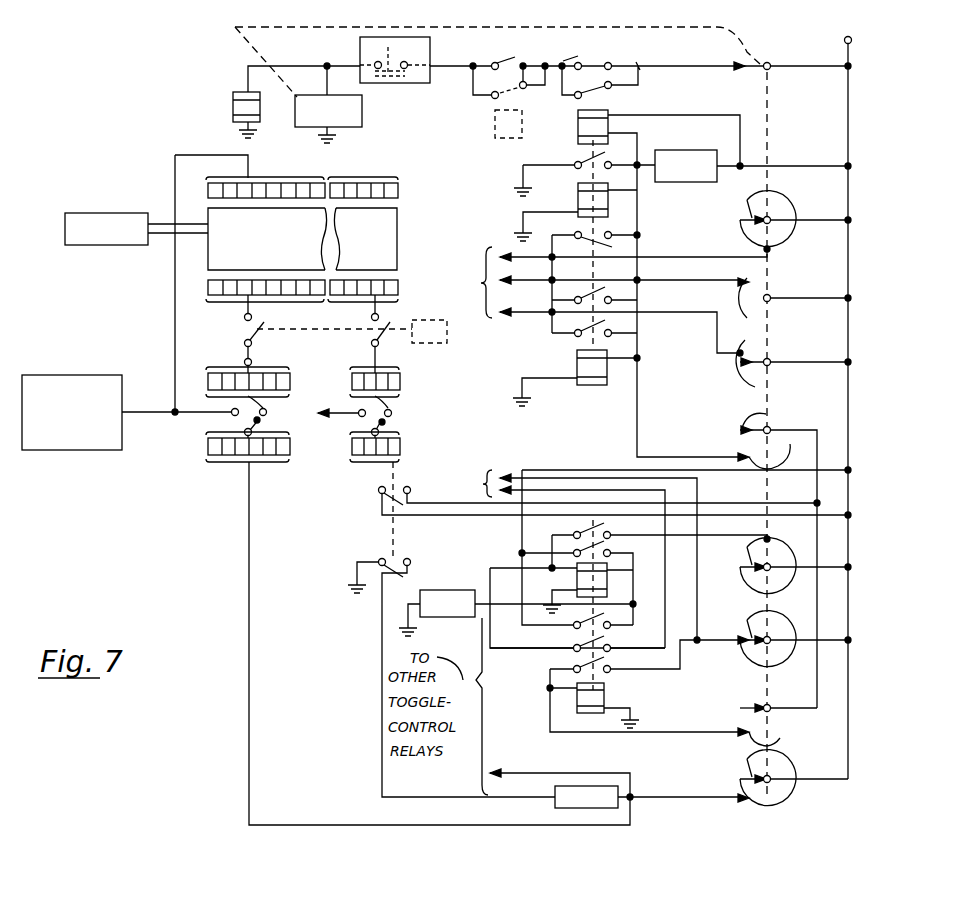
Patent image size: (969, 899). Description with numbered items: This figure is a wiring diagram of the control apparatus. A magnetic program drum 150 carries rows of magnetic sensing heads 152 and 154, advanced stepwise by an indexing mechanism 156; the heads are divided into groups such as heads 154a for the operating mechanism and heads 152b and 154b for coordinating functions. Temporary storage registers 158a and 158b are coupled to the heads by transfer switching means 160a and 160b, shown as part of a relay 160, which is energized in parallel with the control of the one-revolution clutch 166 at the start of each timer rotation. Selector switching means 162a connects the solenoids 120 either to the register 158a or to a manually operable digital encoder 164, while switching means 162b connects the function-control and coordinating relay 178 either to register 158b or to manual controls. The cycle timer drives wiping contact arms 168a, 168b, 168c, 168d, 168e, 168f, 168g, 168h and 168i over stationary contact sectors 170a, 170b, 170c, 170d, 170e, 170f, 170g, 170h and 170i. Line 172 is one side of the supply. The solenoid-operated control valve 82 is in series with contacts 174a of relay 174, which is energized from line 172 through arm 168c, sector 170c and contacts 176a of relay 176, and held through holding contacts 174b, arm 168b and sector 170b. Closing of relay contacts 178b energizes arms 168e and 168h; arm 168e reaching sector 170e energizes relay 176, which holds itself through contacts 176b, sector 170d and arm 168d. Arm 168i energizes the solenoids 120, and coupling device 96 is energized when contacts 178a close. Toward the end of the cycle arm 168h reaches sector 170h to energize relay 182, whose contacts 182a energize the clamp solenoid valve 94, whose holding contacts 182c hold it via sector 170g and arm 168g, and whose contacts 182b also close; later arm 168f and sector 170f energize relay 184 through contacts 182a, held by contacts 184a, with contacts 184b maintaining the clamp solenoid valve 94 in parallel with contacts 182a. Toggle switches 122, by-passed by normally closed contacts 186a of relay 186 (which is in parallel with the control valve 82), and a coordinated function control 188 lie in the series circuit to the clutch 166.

The solenoid-operated control valve 82 is at (706, 128).
The clamp solenoid valve 94 is at (466, 563).
The coupling device 96 is at (585, 810).
The solenoid 120 is at (212, 454).
The toggle switch 122 is at (578, 57).
The magnetic program drum 150 is at (397, 226).
The magnetic sensing heads 152 is at (205, 297).
The sensing and recording heads 152b is at (402, 297).
The magnetic sensing heads 154 is at (207, 193).
The group of sensing heads 154a is at (250, 178).
The sensing and recording heads 154b is at (370, 178).
The indexing mechanism 156 is at (92, 246).
The temporary storage register 158a is at (230, 352).
The temporary storage register 158b is at (403, 382).
The relay 160 is at (233, 109).
The transfer switching means 160a is at (265, 321).
The transfer switching means 160b is at (380, 337).
The selector switching means 162a is at (260, 422).
The switching means 162b is at (386, 423).
The manually operable digital encoder 164 is at (43, 452).
The one-revolution clutch 166 is at (362, 110).
The wiping contact arm 168a is at (770, 60).
The wiping contact arm 168b is at (748, 204).
The wiping contact arm 168c is at (745, 280).
The wiping contact arm 168d is at (746, 383).
The wiping contact arm 168e is at (742, 426).
The wiping contact arm 168f is at (752, 562).
The wiping contact arm 168g is at (757, 616).
The wiping contact arm 168h is at (758, 700).
The wiping contact arm 168i is at (755, 774).
The stationary contact sector 170a is at (750, 72).
The stationary contact sector 170b is at (794, 214).
The stationary contact sector 170c is at (757, 275).
The stationary contact sector 170d is at (748, 345).
The stationary contact sector 170e is at (790, 444).
The stationary contact sector 170f is at (795, 557).
The stationary contact sector 170g is at (790, 620).
The stationary contact sector 170h is at (781, 738).
The stationary contact sector 170i is at (786, 804).
The supply line 172 is at (862, 26).
The relay 174 is at (578, 200).
The control contacts 174a is at (590, 153).
The holding contacts 174b is at (637, 241).
The relay 176 is at (600, 386).
The control contacts 176a is at (630, 297).
The holding contacts 176b is at (615, 325).
The function-control and coordinating relay 178 is at (368, 460).
The relay contacts 178a is at (399, 557).
The relay contacts 178b is at (408, 485).
The relay 182 is at (590, 714).
The control contacts 182a is at (572, 630).
The relay contacts 182b is at (572, 652).
The holding contacts 182c is at (610, 673).
The relay 184 is at (637, 590).
The holding contacts 184a is at (600, 537).
The relay contacts 184b is at (600, 555).
The relay 186 is at (578, 118).
The relay contacts 186a is at (608, 97).
The coordinated function control 188 is at (360, 46).